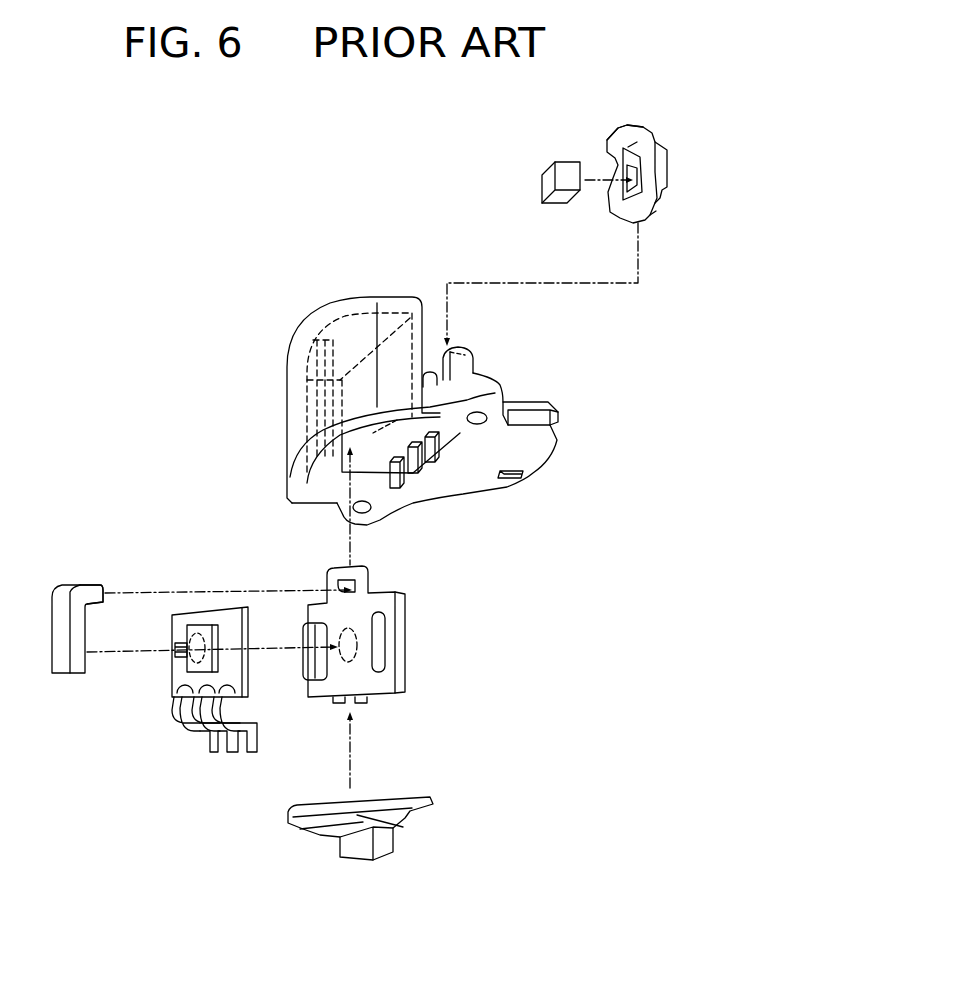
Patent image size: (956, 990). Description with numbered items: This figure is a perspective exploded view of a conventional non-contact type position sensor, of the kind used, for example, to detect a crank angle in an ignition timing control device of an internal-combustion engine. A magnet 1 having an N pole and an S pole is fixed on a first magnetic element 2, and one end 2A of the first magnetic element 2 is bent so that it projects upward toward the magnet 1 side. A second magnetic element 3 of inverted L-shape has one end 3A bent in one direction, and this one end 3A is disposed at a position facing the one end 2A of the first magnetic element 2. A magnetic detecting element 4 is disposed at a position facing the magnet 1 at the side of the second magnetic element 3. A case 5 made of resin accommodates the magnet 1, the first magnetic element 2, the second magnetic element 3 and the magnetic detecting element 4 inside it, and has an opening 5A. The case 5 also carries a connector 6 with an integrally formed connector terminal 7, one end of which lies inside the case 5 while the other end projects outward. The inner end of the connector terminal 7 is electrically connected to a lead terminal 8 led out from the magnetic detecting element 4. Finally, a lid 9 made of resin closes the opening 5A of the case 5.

The magnet 1 is at (555, 168).
The first magnetic element 2 is at (647, 130).
The one end of first magnetic element 2A is at (607, 137).
The second magnetic element 3 is at (77, 655).
The one end of second magnetic element 3A is at (103, 585).
The magnetic detecting element 4 is at (197, 627).
The case 5 is at (333, 318).
The opening 5A is at (380, 480).
The connector 6 is at (532, 447).
The connector terminal 7 is at (430, 453).
The lead terminal 8 is at (208, 747).
The lid 9 is at (352, 843).